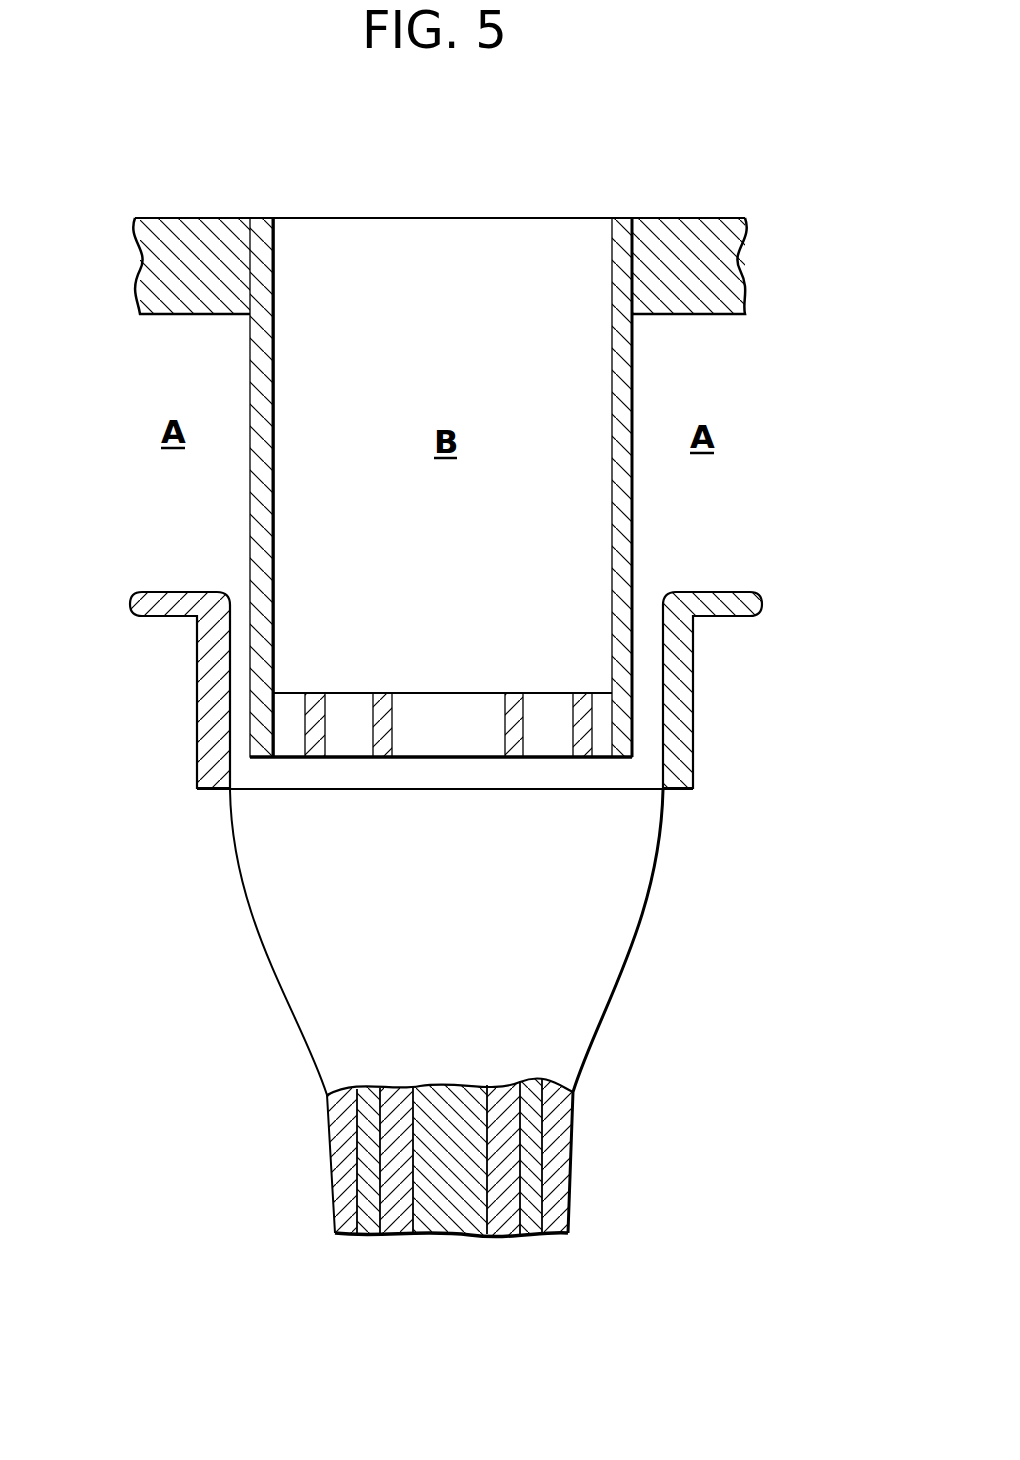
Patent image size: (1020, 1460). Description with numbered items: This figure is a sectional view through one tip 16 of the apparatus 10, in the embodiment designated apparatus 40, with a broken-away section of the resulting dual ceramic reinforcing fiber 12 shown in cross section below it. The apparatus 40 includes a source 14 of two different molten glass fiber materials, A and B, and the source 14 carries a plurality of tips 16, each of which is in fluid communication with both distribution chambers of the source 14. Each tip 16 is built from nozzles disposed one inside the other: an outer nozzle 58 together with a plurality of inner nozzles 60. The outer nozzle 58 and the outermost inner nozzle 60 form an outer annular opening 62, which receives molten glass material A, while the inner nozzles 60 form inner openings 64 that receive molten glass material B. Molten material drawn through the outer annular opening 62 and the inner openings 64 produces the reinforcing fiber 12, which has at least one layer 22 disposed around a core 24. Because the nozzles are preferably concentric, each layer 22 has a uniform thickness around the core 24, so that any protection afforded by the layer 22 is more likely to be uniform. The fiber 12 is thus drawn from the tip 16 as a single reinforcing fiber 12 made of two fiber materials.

The apparatus 10 is at (198, 186).
The ceramic reinforcing fiber 12 is at (606, 1156).
The source of molten ceramic material 14 is at (197, 622).
The tip 16 is at (697, 683).
The layer 22 is at (335, 1236).
The core 24 is at (467, 1238).
The apparatus 40 is at (653, 219).
The outer nozzle 58 is at (200, 790).
The inner nozzle 60 is at (385, 692).
The outer annular opening 62 is at (240, 750).
The inner opening 64 is at (350, 745).